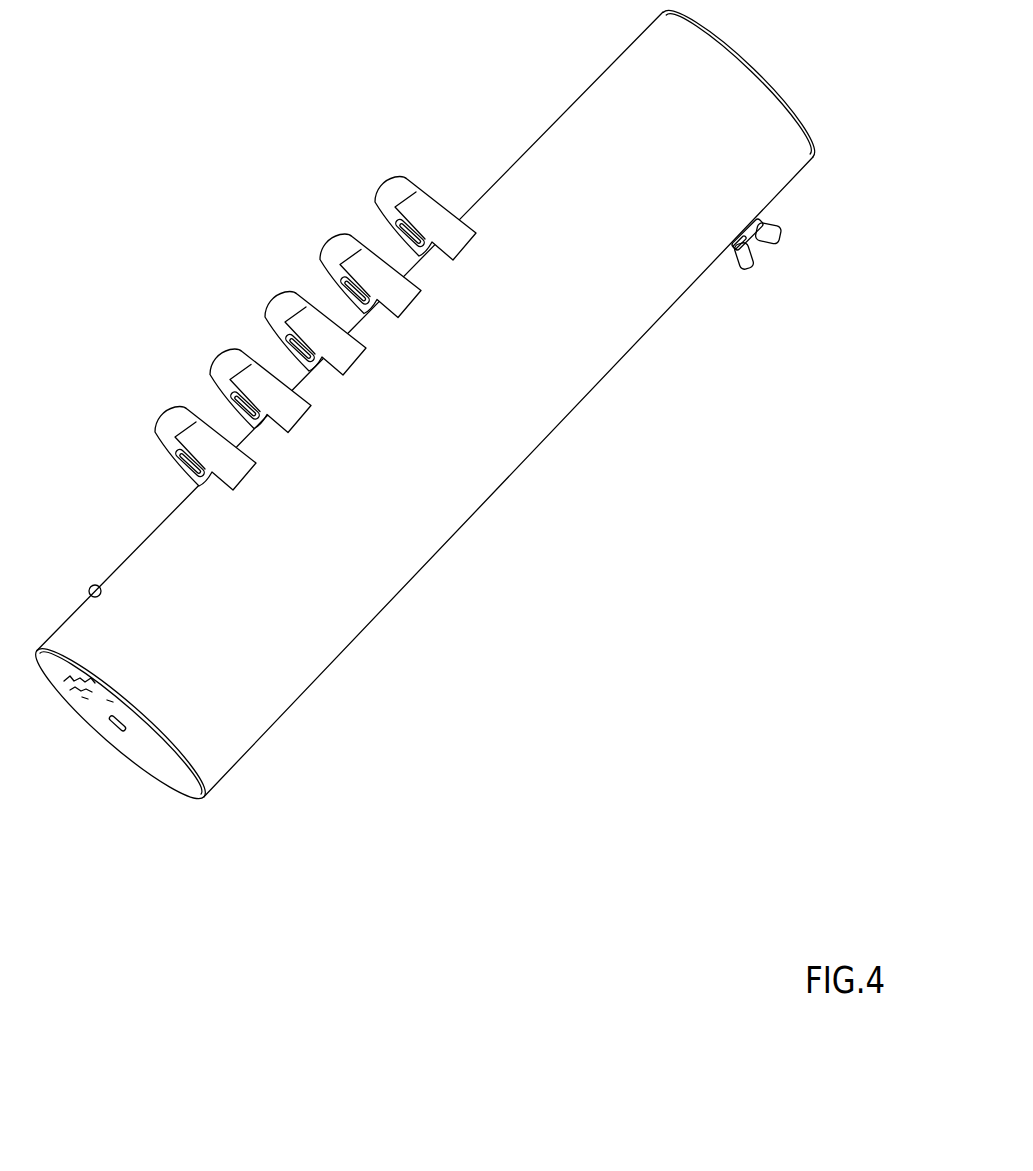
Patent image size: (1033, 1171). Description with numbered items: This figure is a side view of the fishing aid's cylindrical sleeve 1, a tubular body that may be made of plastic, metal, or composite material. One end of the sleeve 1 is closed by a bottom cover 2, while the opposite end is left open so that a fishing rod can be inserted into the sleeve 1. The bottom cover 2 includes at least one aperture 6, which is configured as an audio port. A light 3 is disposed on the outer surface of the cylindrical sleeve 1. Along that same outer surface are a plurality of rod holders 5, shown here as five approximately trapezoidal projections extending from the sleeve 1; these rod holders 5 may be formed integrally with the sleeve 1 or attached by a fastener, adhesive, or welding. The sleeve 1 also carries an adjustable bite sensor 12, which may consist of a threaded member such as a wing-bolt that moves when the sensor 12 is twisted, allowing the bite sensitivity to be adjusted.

The cylindrical sleeve 1 is at (563, 422).
The bottom cover 2 is at (127, 758).
The light 3 is at (90, 588).
The rod holders 5 is at (332, 238).
The aperture 6 is at (113, 726).
The adjustable bite sensor 12 is at (765, 255).